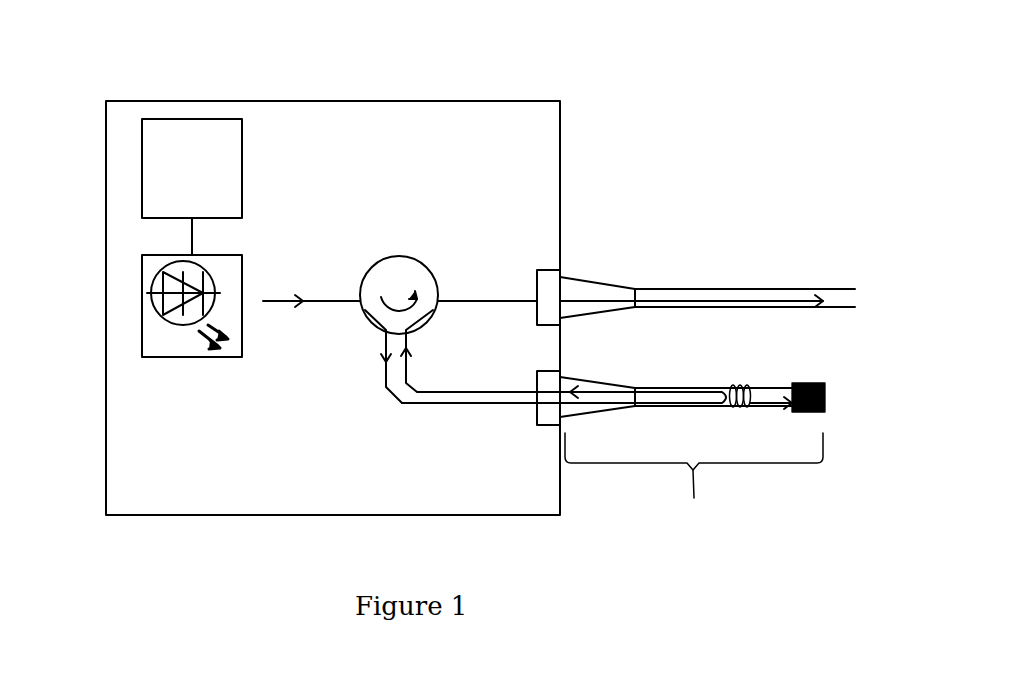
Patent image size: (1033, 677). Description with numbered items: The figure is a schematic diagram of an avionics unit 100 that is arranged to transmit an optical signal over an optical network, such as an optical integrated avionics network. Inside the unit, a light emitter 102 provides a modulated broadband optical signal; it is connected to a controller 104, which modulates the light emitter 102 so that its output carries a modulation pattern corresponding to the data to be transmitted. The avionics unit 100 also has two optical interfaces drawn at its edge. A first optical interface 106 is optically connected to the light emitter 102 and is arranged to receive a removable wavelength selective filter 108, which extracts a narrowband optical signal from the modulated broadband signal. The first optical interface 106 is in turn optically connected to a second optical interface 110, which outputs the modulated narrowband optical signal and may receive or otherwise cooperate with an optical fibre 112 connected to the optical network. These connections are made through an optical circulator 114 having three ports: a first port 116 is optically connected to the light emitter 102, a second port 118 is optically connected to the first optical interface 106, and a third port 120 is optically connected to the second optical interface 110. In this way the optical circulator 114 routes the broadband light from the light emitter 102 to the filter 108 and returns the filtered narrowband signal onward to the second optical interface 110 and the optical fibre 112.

The avionics unit 100 is at (347, 101).
The light emitter 102 is at (145, 317).
The controller 104 is at (150, 175).
The first optical interface 106 is at (537, 425).
The removable wavelength selective filter 108 is at (695, 507).
The second optical interface 110 is at (545, 271).
The optical fibre 112 is at (692, 288).
The optical circulator 114 is at (390, 267).
The first port 116 is at (362, 301).
The second port 118 is at (390, 352).
The third port 120 is at (442, 300).